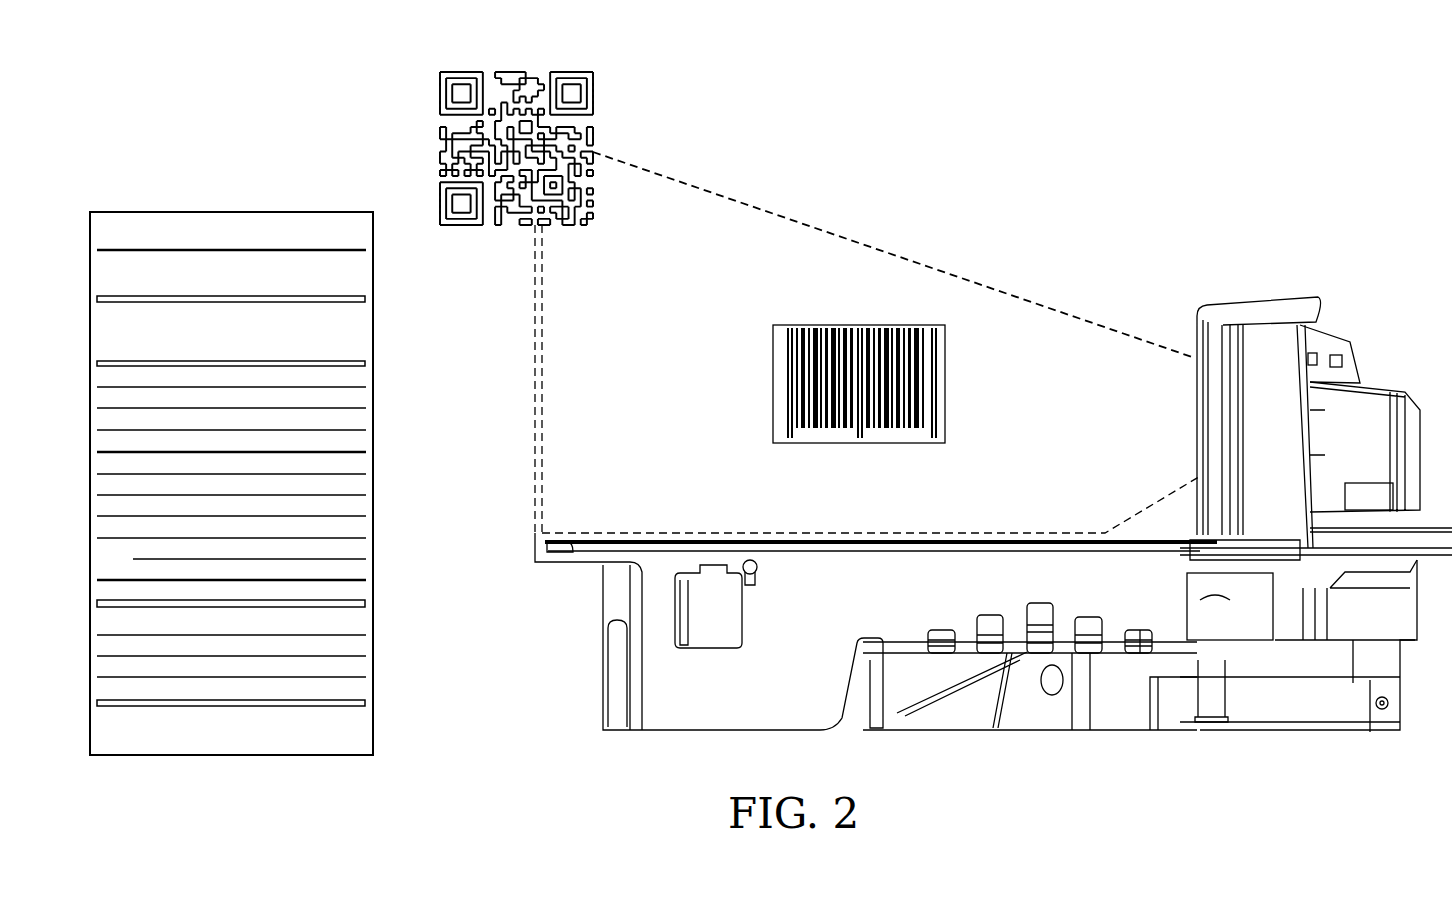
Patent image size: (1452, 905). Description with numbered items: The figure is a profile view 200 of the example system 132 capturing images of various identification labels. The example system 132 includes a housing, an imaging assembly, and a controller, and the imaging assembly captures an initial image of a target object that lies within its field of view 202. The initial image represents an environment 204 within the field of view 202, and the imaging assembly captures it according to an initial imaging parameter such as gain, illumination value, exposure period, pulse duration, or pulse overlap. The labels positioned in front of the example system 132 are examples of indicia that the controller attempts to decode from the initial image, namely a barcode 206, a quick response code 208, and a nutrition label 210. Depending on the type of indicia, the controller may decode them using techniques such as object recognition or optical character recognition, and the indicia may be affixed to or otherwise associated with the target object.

The indicia reading system 200 is at (1323, 108).
The example system 132 is at (1275, 292).
The field of view 202 is at (1000, 295).
The environment 204 is at (730, 252).
The barcode 206 is at (946, 383).
The quick response (QR) code 208 is at (518, 72).
The nutrition label 210 is at (224, 212).